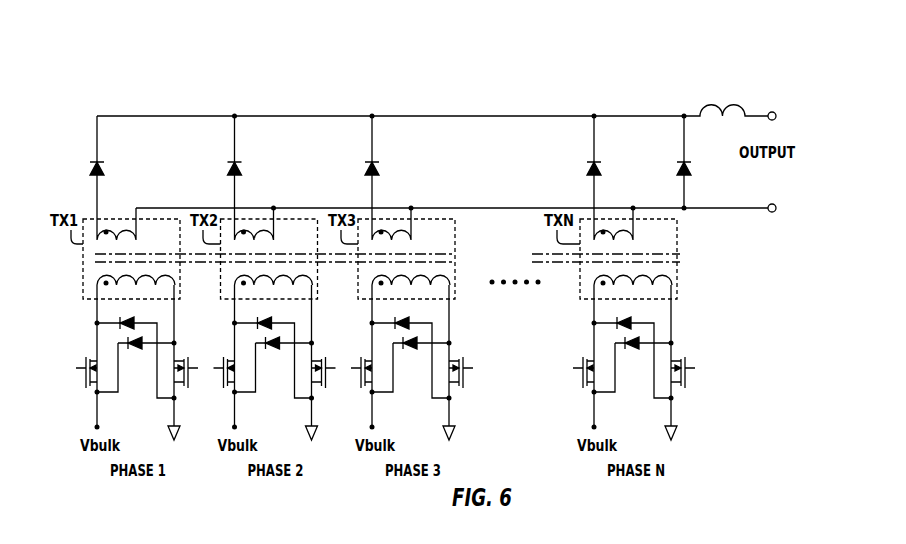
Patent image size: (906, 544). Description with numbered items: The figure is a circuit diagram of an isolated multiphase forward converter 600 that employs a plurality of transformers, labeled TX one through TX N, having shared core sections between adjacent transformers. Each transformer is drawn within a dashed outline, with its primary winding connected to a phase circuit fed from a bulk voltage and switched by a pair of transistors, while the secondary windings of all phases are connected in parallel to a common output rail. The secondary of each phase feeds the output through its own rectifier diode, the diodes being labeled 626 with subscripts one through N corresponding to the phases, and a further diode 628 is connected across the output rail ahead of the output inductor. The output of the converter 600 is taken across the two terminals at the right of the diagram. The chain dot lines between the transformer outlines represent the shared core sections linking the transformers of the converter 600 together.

The isolated multiphase forward converter 600 is at (477, 83).
The output rectifier diode 626 is at (104, 169).
The freewheeling diode 628 is at (691, 169).